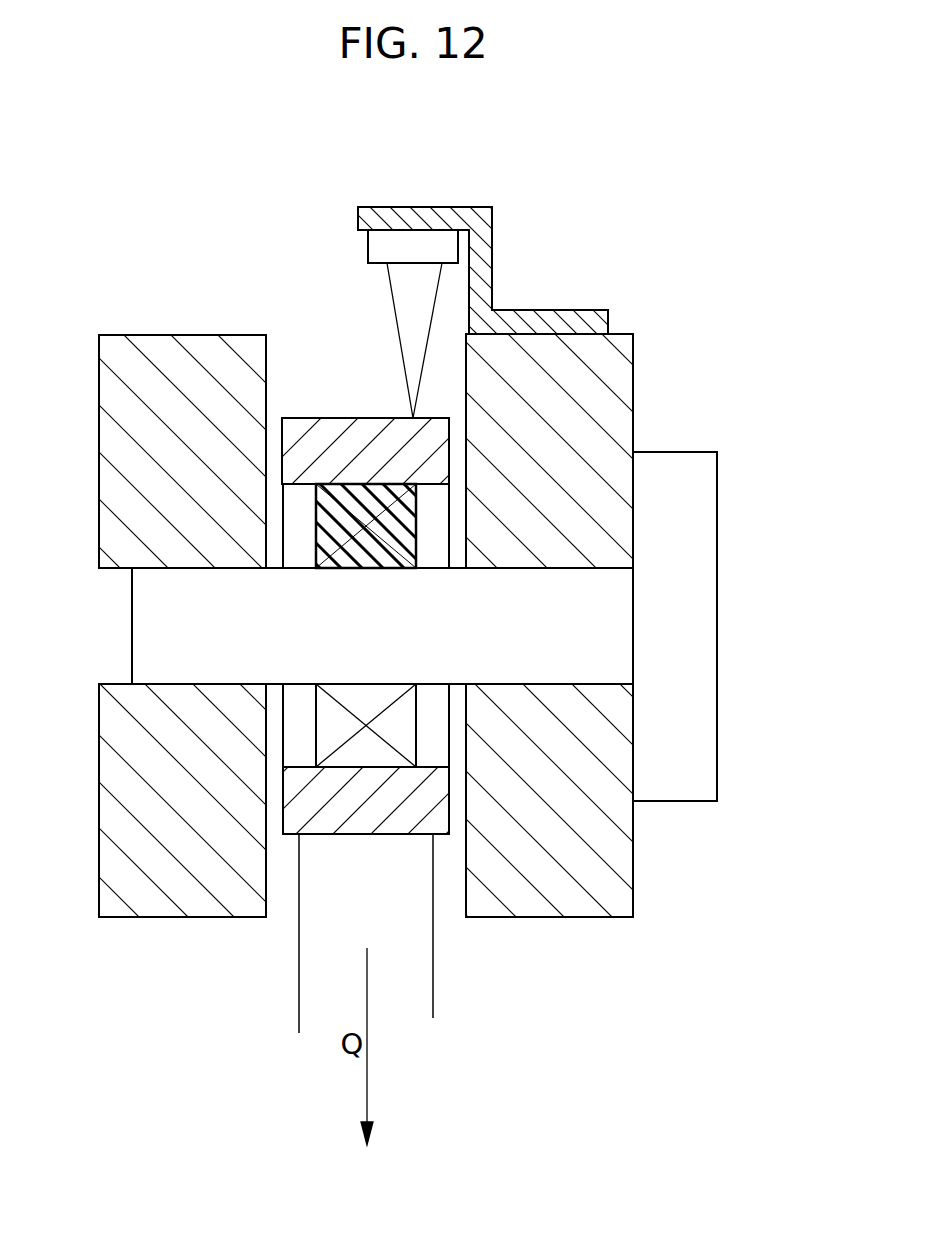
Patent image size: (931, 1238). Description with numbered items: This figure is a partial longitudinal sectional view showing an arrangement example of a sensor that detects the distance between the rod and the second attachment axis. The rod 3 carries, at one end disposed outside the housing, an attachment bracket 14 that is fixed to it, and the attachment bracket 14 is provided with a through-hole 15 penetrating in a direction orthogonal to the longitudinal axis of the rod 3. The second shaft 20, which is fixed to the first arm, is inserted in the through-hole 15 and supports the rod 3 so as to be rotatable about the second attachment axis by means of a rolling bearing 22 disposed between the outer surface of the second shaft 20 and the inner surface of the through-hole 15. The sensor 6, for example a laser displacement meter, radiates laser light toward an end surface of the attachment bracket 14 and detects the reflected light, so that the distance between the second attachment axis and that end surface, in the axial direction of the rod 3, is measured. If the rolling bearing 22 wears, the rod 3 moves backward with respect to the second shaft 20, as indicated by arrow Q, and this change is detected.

The rod 3 is at (433, 970).
The sensor 6 is at (368, 235).
The attachment bracket 14 is at (336, 404).
The through-hole 15 is at (304, 767).
The second shaft 20 is at (737, 668).
The rolling bearing 22 is at (367, 707).